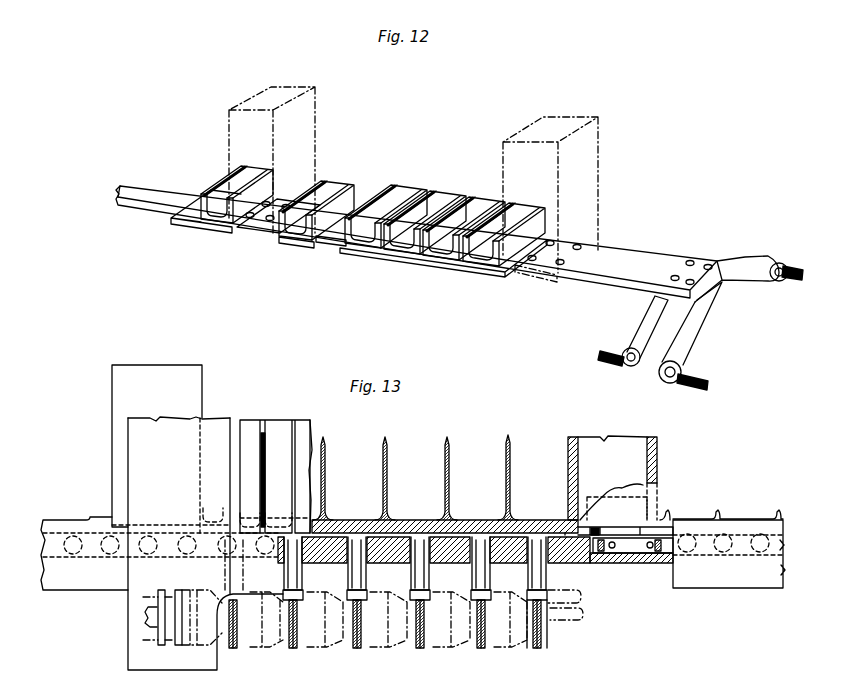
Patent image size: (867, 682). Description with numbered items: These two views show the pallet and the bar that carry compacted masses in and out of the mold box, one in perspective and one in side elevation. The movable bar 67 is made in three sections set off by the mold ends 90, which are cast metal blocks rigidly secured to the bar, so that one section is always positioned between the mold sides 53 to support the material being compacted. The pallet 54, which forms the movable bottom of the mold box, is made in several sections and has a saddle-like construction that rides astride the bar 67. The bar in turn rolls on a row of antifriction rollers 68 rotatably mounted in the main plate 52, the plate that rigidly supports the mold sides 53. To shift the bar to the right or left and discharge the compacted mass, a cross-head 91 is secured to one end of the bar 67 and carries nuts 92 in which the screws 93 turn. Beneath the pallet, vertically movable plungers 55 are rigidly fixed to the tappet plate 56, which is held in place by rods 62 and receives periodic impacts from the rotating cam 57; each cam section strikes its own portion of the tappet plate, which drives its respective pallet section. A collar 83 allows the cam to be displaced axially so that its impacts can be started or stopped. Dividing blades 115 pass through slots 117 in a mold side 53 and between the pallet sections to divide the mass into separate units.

In FIG. 13, the main plate 52 is at (178, 519).
In FIG. 13, the mold sides 53 is at (148, 463).
In FIG. 12, the pallet 54 is at (440, 213).
In FIG. 13, the pallet 54 is at (468, 518).
In FIG. 13, the plungers 55 is at (548, 573).
In FIG. 13, the tappet plate 56 is at (548, 593).
In FIG. 13, the cam 57 is at (500, 645).
In FIG. 13, the rods 62 is at (543, 637).
In FIG. 12, the bar 67 is at (138, 190).
In FIG. 13, the bar 67 is at (55, 532).
In FIG. 13, the antifriction rollers 68 is at (175, 551).
In FIG. 13, the collar 83 is at (167, 640).
In FIG. 12, the mold ends 90 is at (316, 104).
In FIG. 13, the mold ends 90 is at (202, 374).
In FIG. 12, the cross-head 91 is at (733, 287).
In FIG. 12, the nuts 92 is at (636, 372).
In FIG. 12, the screws 93 is at (788, 281).
In FIG. 13, the dividing blades 115 is at (443, 442).
In FIG. 13, the slots 117 is at (263, 433).